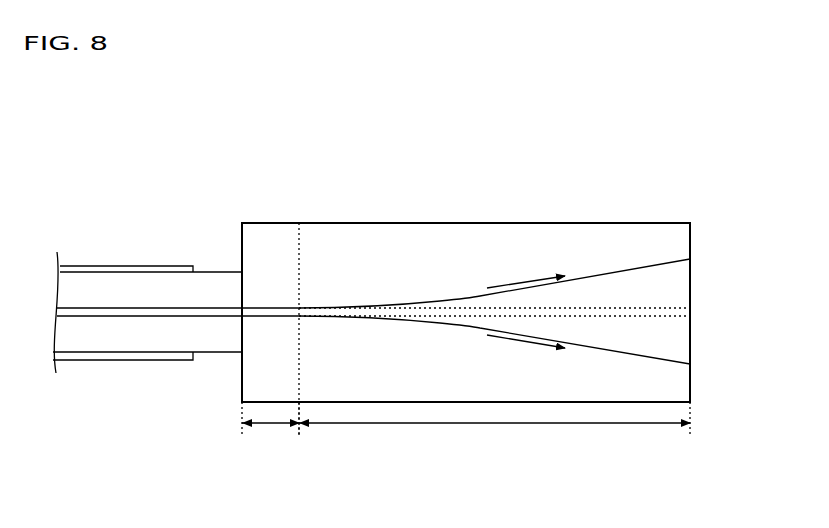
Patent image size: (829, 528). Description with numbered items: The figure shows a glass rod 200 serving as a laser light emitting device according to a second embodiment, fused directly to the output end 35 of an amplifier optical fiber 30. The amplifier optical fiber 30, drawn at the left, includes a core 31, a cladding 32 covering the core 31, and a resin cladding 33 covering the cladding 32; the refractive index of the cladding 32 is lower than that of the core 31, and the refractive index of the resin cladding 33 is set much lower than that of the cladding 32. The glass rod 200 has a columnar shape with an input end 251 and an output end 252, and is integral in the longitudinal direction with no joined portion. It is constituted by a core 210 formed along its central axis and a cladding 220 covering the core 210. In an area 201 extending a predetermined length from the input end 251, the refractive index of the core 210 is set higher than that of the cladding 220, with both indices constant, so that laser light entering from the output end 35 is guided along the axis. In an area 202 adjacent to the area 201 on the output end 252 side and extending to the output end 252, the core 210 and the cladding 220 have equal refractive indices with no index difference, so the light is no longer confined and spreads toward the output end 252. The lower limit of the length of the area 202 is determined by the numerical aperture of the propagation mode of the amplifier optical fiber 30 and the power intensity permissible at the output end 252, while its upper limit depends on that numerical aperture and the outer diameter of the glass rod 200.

The amplifier optical fiber 30 is at (143, 238).
The core 31 is at (135, 310).
The cladding 32 is at (97, 333).
The resin cladding 33 is at (65, 353).
The output end 35 is at (242, 287).
The glass rod 200 is at (645, 172).
The area 201 is at (270, 426).
The area 202 is at (494, 426).
The core 210 is at (393, 307).
The cladding 220 is at (525, 250).
The input end 251 is at (242, 373).
The output end 252 is at (690, 367).